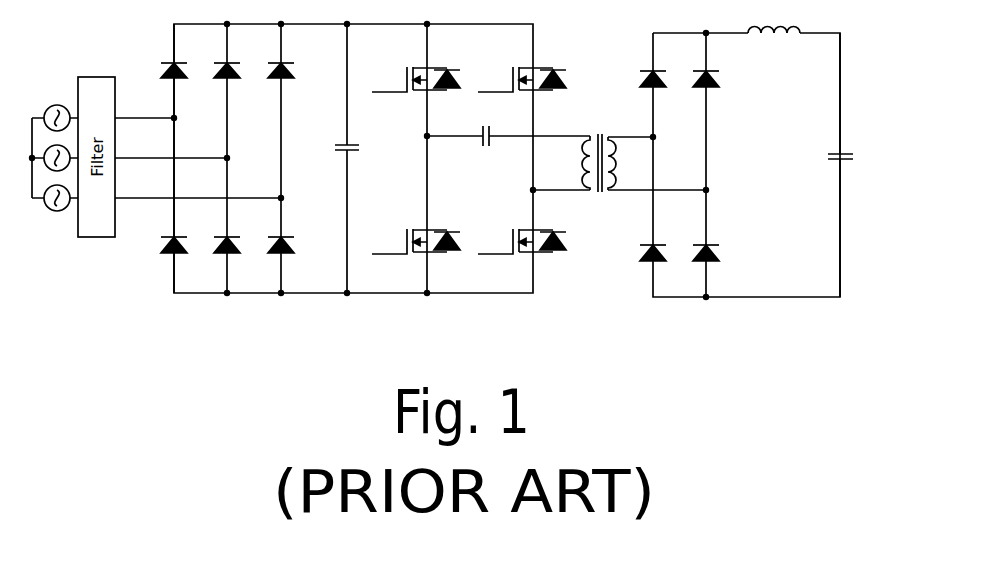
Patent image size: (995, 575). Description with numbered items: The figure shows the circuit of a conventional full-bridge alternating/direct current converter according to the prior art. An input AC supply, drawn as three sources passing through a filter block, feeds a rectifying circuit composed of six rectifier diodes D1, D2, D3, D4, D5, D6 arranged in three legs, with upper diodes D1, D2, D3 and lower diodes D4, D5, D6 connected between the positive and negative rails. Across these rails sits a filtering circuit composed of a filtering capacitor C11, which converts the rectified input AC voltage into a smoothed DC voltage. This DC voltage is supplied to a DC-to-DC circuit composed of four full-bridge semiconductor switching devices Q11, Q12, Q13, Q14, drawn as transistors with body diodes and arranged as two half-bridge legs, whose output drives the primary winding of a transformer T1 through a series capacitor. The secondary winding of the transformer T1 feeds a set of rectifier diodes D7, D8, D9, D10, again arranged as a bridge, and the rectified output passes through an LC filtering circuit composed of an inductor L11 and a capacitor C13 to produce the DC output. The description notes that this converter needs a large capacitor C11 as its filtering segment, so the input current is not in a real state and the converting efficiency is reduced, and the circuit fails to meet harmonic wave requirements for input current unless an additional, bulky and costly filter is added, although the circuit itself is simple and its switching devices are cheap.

The rectifier diode D1 is at (167, 71).
The rectifier diode D2 is at (220, 91).
The rectifier diode D3 is at (275, 111).
The rectifier diode D4 is at (167, 205).
The rectifier diode D5 is at (220, 225).
The rectifier diode D6 is at (275, 245).
The filtering capacitor C11 is at (363, 158).
The full-bridge semiconductor switching device Q11 is at (415, 79).
The full-bridge semiconductor switching device Q12 is at (521, 79).
The full-bridge semiconductor switching device Q13 is at (519, 241).
The full-bridge semiconductor switching device Q14 is at (413, 241).
The transformer T1 is at (644, 154).
The rectifier diode D7 is at (646, 69).
The rectifier diode D8 is at (699, 69).
The rectifier diode D9 is at (699, 242).
The rectifier diode D10 is at (645, 242).
The inductor L11 is at (774, 20).
The capacitor C13 is at (856, 165).